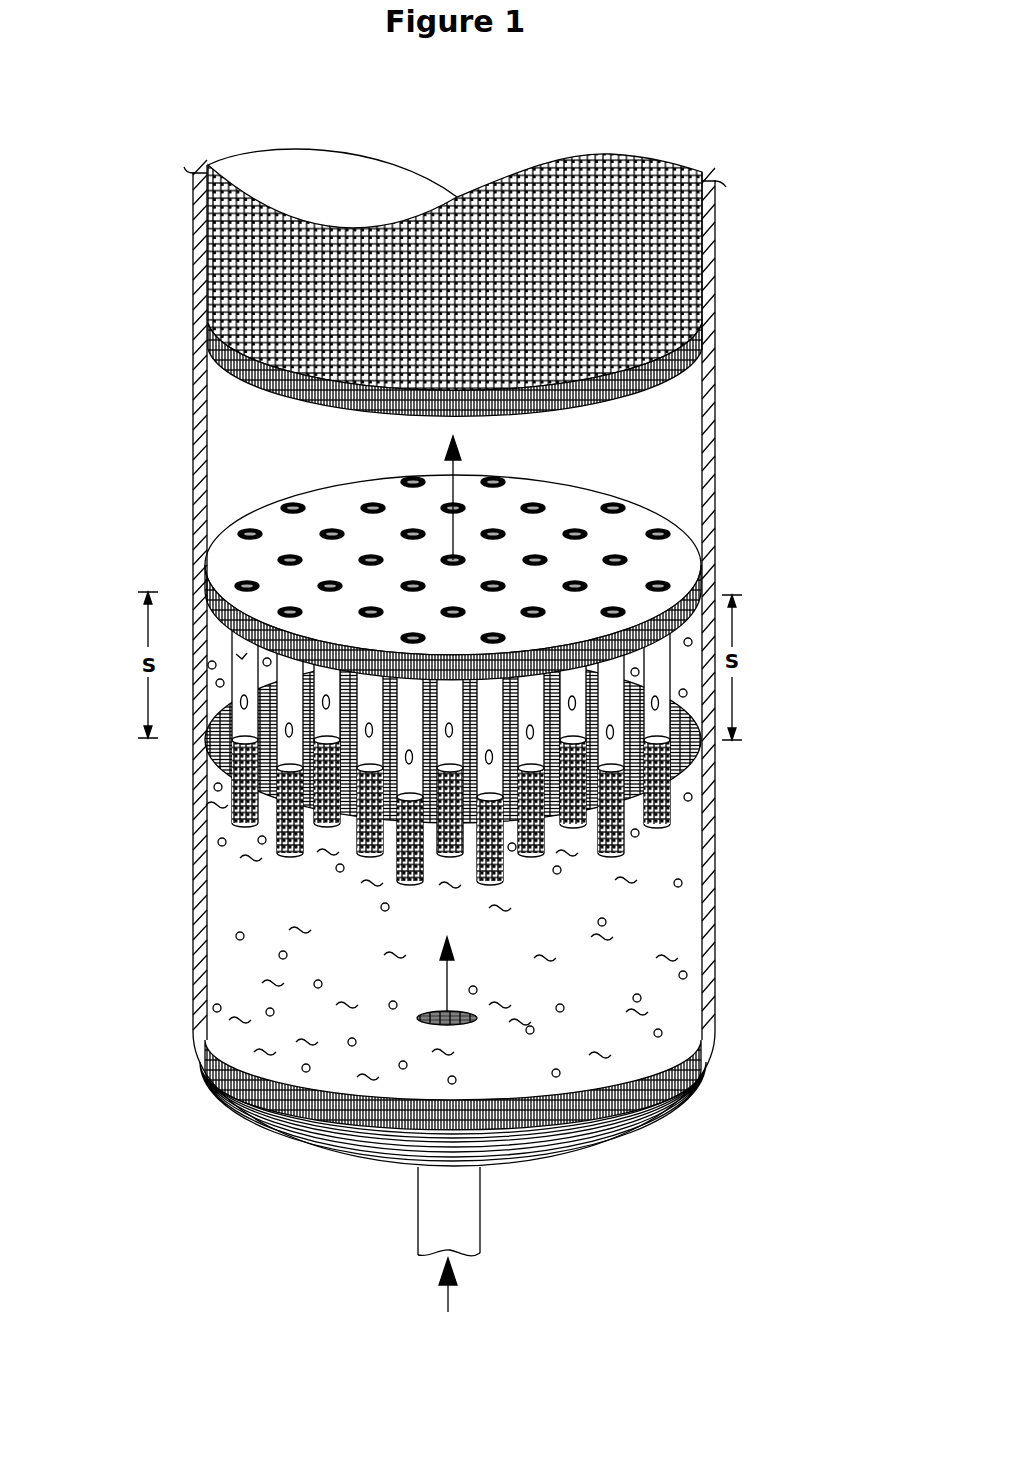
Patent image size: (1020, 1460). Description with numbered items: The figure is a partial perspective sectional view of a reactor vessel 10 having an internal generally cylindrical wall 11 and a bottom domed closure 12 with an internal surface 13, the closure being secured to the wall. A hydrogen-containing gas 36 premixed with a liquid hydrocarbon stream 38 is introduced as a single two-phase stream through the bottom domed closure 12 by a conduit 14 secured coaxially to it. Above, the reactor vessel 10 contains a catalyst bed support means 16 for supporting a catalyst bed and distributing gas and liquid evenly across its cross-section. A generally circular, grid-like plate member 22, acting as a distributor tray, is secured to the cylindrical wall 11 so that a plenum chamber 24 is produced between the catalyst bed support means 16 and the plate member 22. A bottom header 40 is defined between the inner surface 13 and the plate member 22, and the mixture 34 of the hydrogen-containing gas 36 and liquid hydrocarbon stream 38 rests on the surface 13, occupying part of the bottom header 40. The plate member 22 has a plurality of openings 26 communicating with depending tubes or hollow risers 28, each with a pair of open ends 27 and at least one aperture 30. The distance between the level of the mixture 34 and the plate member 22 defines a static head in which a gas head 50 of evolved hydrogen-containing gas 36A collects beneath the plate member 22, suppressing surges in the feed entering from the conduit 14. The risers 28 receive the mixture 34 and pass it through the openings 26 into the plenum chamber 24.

The reactor vessel 10 is at (717, 995).
The internal generally cylindrical wall 11 is at (207, 422).
The bottom domed closure 12 is at (587, 1137).
The internal surface 13 is at (578, 1039).
The conduit 14 is at (453, 1212).
The catalyst bed support means 16 is at (688, 353).
The circular plate member 22 is at (677, 517).
The plenum chamber 24 is at (660, 480).
The openings 26 is at (372, 502).
The open ends 27 is at (518, 608).
The hollow risers 28 is at (215, 648).
The aperture 30 is at (205, 747).
The mixture 34 is at (222, 883).
The hydrogen-containing gas 36 is at (694, 797).
The evolved hydrogen-containing gas 36A is at (216, 690).
The liquid hydrocarbon stream 38 is at (650, 858).
The bottom header 40 is at (180, 918).
The gas head 50 is at (241, 657).